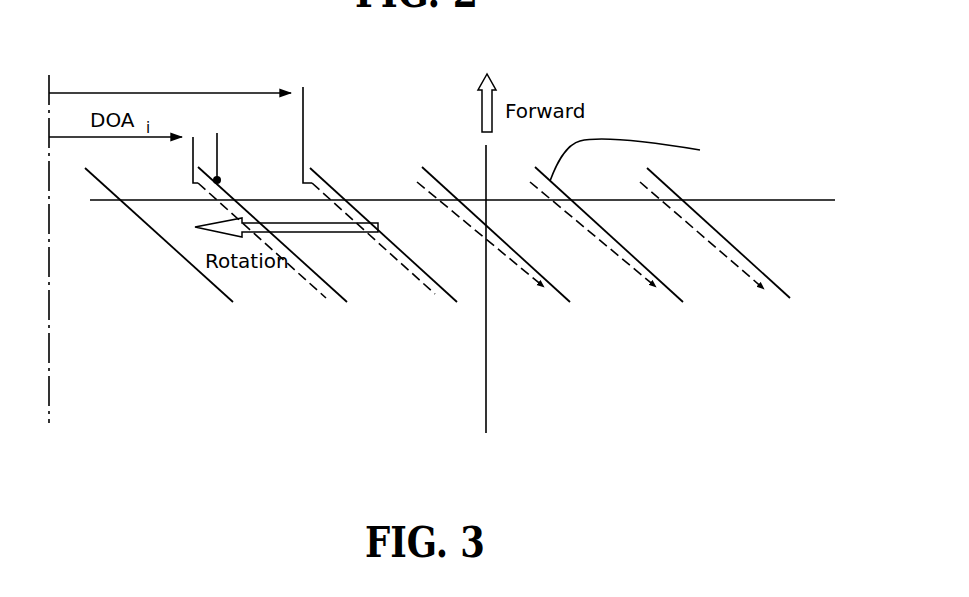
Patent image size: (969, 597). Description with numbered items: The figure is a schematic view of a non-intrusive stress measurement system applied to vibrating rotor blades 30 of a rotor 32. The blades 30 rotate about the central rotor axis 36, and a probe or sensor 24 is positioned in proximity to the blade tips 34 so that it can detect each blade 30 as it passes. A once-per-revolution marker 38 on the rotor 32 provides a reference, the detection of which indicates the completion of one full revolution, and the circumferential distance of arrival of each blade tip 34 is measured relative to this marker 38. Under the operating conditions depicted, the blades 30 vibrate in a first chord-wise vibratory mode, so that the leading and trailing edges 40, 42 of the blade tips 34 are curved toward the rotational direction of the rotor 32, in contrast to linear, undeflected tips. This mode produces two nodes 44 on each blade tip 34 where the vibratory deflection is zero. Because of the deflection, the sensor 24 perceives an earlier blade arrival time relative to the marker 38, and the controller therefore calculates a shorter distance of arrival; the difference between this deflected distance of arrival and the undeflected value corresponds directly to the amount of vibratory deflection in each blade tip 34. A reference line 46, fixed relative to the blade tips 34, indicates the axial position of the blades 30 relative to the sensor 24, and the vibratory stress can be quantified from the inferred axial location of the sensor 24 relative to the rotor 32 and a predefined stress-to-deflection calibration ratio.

The sensor 24 is at (221, 178).
The rotor blades 30 is at (633, 218).
The rotor 32 is at (703, 88).
The blade tips 34 is at (683, 199).
The rotor axis 36 is at (486, 378).
The once-per-revolution marker 38 is at (49, 355).
The leading edge 40 is at (423, 185).
The trailing edge 42 is at (548, 291).
The nodes 44 is at (760, 292).
The reference line 46 is at (765, 200).